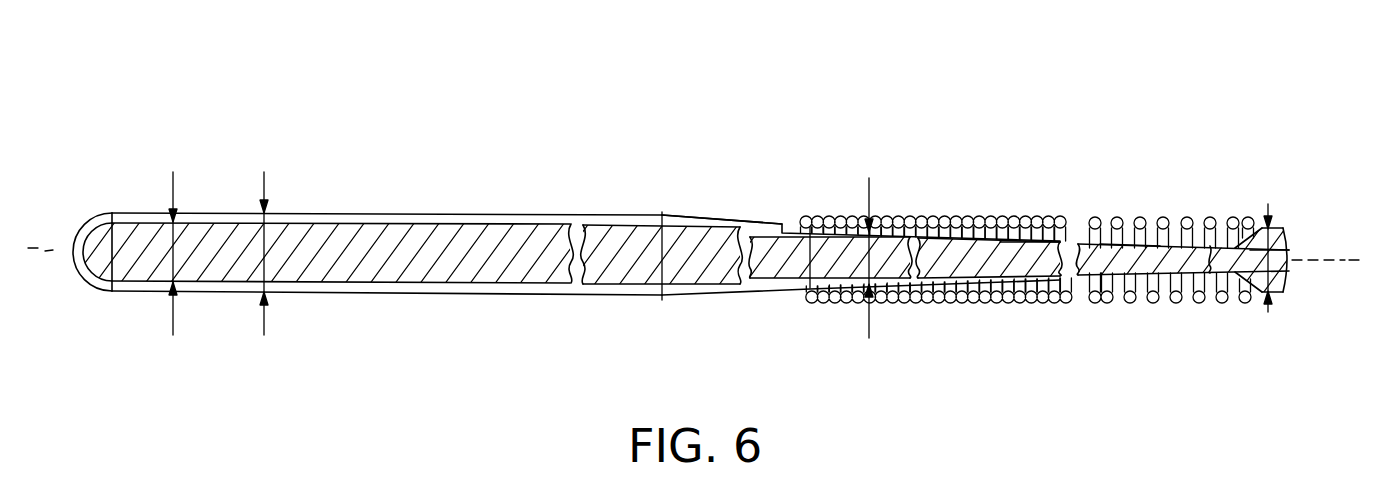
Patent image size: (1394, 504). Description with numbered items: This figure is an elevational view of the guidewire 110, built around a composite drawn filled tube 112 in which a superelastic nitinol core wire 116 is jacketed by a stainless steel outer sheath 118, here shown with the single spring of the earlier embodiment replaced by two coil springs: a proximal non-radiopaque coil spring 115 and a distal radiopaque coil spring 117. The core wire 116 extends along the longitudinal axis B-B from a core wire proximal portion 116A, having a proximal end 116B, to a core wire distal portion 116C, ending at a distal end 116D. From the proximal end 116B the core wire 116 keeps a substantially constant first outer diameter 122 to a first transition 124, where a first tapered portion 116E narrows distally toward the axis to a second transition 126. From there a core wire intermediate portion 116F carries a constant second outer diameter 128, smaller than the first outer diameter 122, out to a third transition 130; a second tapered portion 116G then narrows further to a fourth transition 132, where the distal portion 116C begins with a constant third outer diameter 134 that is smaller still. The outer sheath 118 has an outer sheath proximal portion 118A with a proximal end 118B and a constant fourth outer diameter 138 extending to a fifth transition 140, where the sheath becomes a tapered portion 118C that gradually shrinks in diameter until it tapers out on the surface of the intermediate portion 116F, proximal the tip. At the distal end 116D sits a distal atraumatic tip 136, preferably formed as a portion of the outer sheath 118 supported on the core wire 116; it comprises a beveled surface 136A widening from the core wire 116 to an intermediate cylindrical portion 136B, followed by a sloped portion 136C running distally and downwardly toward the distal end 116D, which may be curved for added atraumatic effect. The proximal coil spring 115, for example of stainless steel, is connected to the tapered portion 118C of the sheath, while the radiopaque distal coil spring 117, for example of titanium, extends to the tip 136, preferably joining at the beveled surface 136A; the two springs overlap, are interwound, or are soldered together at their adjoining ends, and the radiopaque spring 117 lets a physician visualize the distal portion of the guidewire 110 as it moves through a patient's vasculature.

The guidewire 110 is at (906, 105).
The drawn filled tube 112 is at (557, 210).
The proximal coil spring 115 is at (937, 310).
The core wire 116 is at (401, 273).
The core wire proximal portion 116A is at (346, 234).
The core wire proximal end 116B is at (72, 253).
The core wire distal portion 116C is at (1186, 252).
The core wire distal end 116D is at (1290, 258).
The first tapered portion 116E is at (782, 228).
The core wire intermediate portion 116F is at (967, 252).
The second tapered portion 116G is at (1047, 282).
The distal coil spring 117 is at (1131, 315).
The outer sheath 118 is at (338, 298).
The outer sheath proximal portion 118A is at (494, 298).
The outer sheath proximal end 118B is at (72, 262).
The tapered portion of the outer sheath 118C is at (760, 291).
The first outer diameter 122 is at (173, 239).
The first transition 124 is at (662, 258).
The second transition 126 is at (810, 258).
The second outer diameter 128 is at (873, 244).
The third transition 130 is at (1018, 300).
The fourth transition 132 is at (1128, 257).
The third outer diameter 134 is at (1270, 243).
The distal atraumatic tip 136 is at (1289, 293).
The beveled surface 136A is at (1233, 280).
The intermediate cylindrical portion 136B is at (1280, 292).
The sloped portion 136C is at (1289, 242).
The fourth outer diameter 138 is at (266, 239).
The fifth transition 140 is at (674, 216).